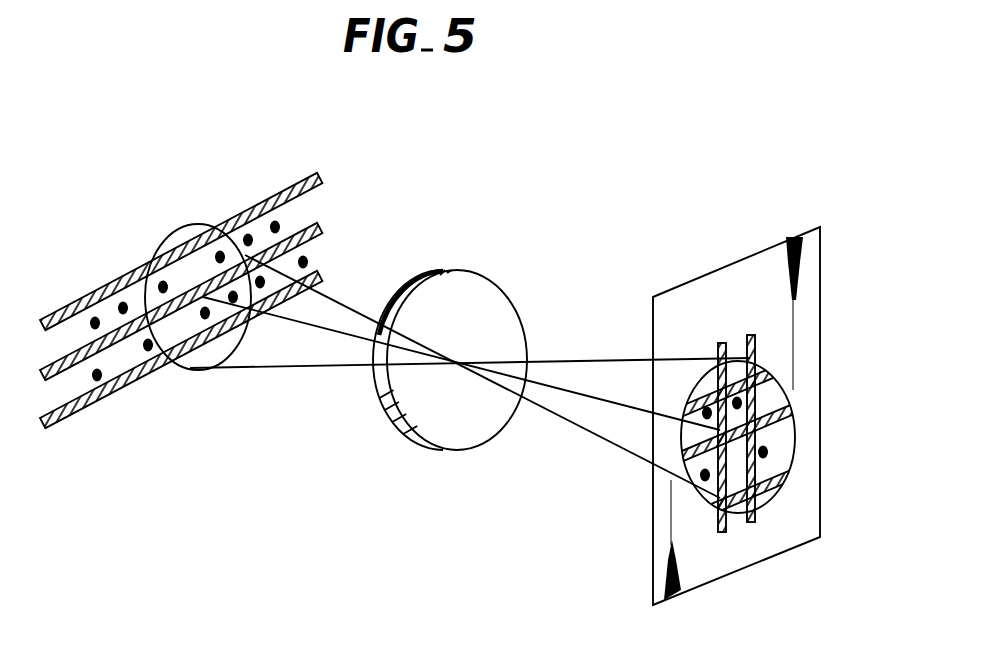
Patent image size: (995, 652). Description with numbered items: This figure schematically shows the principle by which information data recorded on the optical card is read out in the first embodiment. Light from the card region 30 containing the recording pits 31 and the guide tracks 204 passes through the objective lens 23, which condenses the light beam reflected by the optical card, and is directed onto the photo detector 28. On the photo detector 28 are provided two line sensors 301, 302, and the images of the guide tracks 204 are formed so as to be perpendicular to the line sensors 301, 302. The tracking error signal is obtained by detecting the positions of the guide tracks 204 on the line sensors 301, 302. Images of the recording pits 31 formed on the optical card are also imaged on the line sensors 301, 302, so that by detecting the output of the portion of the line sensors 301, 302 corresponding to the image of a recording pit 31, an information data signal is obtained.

The guide tracks 204 is at (319, 278).
The recording pits 31 is at (95, 316).
The object field circle 30 is at (193, 371).
The objective lens 23 is at (475, 282).
The photo detector 28 is at (742, 258).
The line sensor 301 is at (721, 343).
The line sensor 302 is at (755, 338).